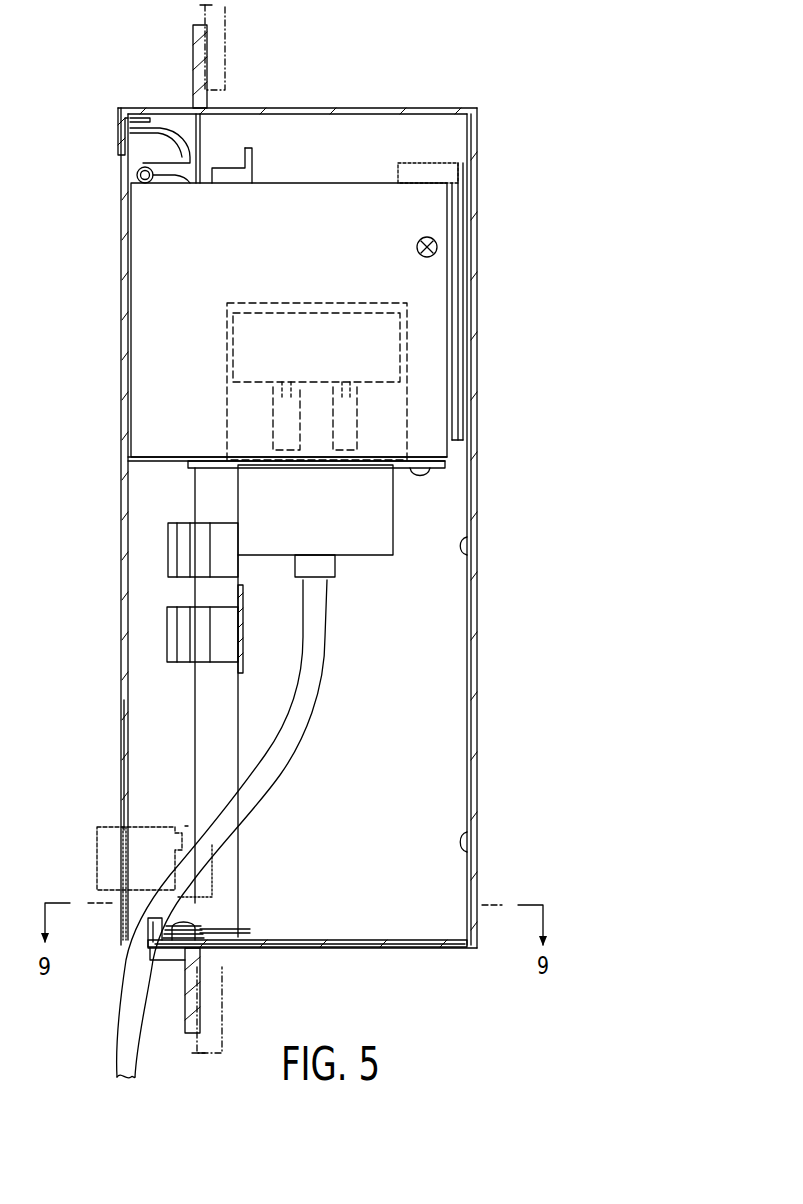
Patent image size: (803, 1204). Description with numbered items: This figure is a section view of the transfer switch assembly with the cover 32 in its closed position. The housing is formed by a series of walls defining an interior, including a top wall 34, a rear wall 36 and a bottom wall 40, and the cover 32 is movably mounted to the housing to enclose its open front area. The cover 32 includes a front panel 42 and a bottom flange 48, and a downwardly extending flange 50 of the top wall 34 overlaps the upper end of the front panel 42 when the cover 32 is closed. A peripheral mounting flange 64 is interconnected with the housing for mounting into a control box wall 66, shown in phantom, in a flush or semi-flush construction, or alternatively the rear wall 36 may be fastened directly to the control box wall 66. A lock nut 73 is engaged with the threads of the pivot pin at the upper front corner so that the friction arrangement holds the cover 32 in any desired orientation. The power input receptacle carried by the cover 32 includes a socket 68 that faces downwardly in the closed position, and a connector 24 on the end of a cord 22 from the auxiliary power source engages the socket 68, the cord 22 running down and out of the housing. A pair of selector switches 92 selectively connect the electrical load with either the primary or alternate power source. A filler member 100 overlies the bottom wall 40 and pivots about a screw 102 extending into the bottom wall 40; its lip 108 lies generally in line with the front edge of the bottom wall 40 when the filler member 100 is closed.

The cord 22 is at (268, 776).
The connector 24 is at (395, 510).
The cover 32 is at (124, 396).
The top wall 34 is at (340, 110).
The rear wall 36 is at (474, 456).
The bottom wall 40 is at (318, 950).
The front panel 42 is at (121, 742).
The bottom flange 48 is at (182, 963).
The downwardly extending flange 50 is at (120, 128).
The peripheral mounting flange 64 is at (190, 64).
The control box wall 66 is at (226, 46).
The socket 68 is at (438, 478).
The lock nut 73 is at (158, 183).
The selector switches 92 is at (166, 550).
The filler member 100 is at (285, 937).
The screw 102 is at (185, 918).
The lip 108 is at (145, 930).